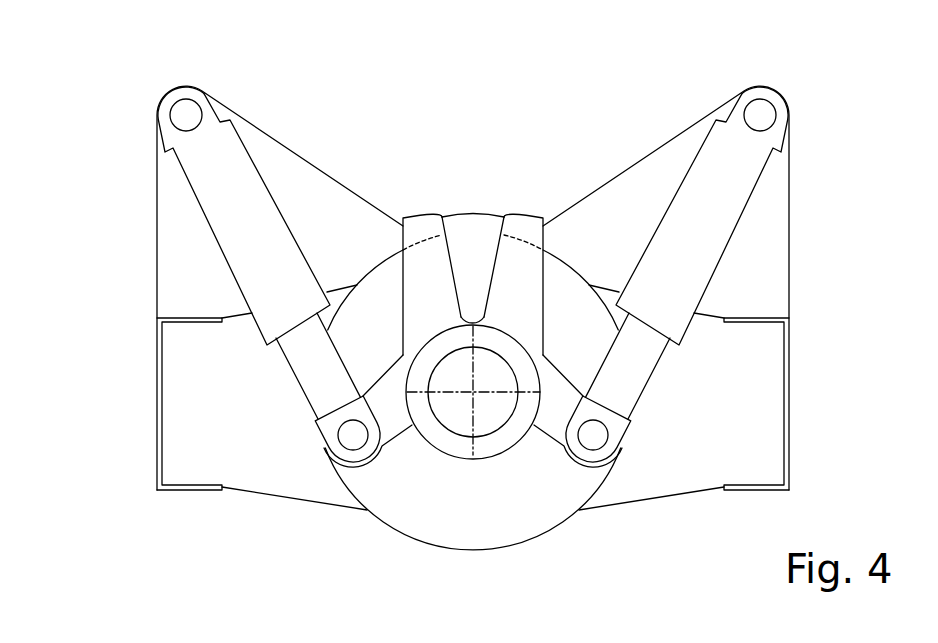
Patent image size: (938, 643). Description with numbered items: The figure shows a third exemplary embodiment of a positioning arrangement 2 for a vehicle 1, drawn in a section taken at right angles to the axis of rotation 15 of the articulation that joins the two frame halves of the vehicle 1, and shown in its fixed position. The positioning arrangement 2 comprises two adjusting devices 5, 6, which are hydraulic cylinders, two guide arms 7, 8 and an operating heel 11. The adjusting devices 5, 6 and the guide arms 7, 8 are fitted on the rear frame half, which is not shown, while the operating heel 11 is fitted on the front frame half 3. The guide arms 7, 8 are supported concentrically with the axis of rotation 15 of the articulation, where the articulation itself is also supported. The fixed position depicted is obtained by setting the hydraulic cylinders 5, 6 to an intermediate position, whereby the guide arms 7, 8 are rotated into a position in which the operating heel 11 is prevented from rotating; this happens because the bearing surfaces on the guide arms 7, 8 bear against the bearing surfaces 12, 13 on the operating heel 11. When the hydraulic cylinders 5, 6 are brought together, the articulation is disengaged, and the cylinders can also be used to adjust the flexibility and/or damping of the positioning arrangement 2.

The vehicle 1 is at (75, 57).
The positioning arrangement 2 is at (613, 538).
The front frame half 3 is at (178, 418).
The adjusting device 5 is at (250, 188).
The adjusting device 6 is at (686, 203).
The guide arm 7 is at (418, 287).
The guide arm 8 is at (515, 287).
The operating heel 11 is at (468, 225).
The bearing surface 12 is at (442, 229).
The bearing surface 13 is at (490, 300).
The axis of rotation 15 is at (482, 390).